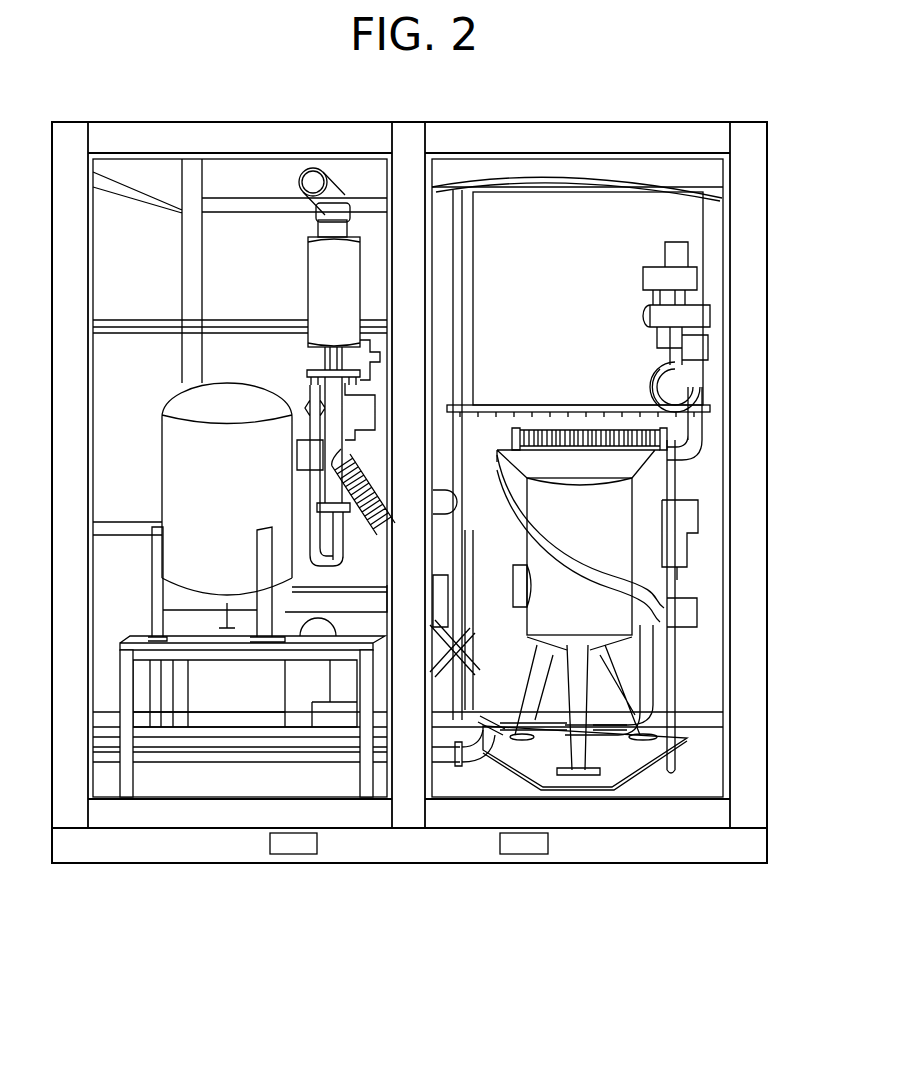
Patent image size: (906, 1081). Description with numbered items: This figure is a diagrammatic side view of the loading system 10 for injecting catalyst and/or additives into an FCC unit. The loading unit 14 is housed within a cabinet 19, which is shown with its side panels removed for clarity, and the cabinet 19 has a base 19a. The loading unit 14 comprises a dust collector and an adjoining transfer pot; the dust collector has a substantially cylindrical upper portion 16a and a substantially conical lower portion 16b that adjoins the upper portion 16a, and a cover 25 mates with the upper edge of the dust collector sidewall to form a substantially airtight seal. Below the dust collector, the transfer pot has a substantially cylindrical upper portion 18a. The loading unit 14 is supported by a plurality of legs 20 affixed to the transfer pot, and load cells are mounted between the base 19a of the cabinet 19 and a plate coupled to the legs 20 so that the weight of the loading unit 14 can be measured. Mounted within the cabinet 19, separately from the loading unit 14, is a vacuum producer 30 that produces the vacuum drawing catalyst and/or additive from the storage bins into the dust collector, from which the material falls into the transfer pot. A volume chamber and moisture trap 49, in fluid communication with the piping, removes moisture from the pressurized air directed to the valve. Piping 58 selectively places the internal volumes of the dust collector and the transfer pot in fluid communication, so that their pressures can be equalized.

The loading system 10 is at (706, 112).
The cabinet 19 is at (770, 197).
The base 19a is at (645, 845).
The cover 25 is at (586, 168).
The loading unit 14 is at (645, 183).
The vacuum producer 30 is at (325, 287).
The volume chamber and moisture trap 49 is at (234, 482).
The upper portion 16a is at (582, 312).
The lower portion 16b is at (625, 462).
The upper portion 18a is at (586, 615).
The piping 58 is at (660, 448).
The legs 20 is at (575, 755).